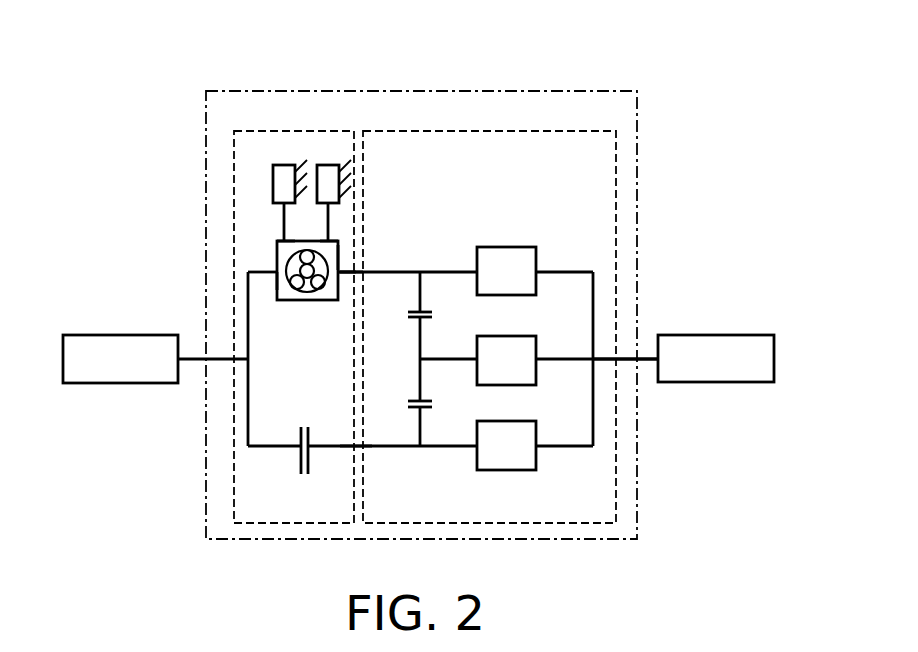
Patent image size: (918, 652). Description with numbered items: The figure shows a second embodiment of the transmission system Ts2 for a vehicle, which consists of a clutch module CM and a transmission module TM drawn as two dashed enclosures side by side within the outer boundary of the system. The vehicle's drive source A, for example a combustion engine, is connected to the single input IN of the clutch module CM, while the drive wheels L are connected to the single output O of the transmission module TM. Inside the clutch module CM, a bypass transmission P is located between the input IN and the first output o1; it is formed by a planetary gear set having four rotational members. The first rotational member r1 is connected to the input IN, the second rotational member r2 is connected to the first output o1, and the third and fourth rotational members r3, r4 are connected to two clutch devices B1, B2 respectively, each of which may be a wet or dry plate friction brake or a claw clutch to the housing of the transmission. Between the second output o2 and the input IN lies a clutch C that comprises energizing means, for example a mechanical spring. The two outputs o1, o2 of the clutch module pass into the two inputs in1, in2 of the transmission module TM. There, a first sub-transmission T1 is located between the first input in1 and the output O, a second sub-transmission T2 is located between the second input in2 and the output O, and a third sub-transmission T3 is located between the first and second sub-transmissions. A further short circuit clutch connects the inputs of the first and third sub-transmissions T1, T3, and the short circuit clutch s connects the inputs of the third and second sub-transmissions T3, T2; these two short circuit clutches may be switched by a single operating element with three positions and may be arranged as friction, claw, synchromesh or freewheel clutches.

The transmission system Ts2 is at (206, 91).
The clutch module CM is at (255, 131).
The transmission module TM is at (557, 131).
The first clutch device B1 is at (283, 165).
The third clutch device B2 is at (327, 165).
The bypass transmission P is at (285, 256).
The first rotational member r1 is at (275, 281).
The second rotational member r2 is at (340, 258).
The third rotational member r3 is at (283, 241).
The fourth rotational member r4 is at (328, 242).
The first input in1 is at (358, 272).
The second input in2 is at (363, 446).
The first output o1 is at (352, 273).
The second output o2 is at (352, 446).
The short circuit clutch s is at (406, 406).
The first sub-transmission T1 is at (507, 267).
The second sub-transmission T2 is at (504, 448).
The third sub-transmission T3 is at (515, 352).
The drive source A is at (121, 362).
The drive wheels L is at (718, 363).
The input IN is at (233, 360).
The output O is at (615, 360).
The clutch C is at (305, 480).